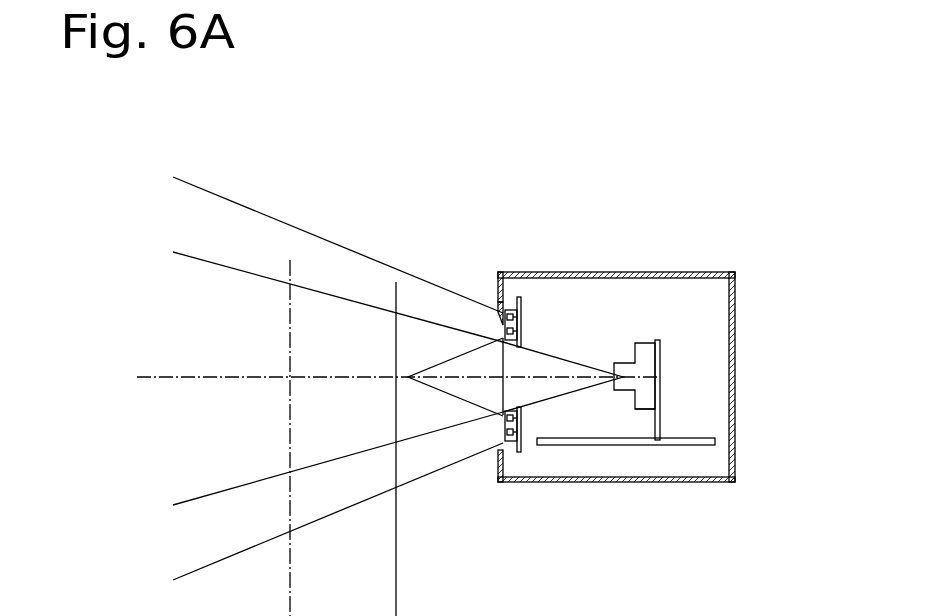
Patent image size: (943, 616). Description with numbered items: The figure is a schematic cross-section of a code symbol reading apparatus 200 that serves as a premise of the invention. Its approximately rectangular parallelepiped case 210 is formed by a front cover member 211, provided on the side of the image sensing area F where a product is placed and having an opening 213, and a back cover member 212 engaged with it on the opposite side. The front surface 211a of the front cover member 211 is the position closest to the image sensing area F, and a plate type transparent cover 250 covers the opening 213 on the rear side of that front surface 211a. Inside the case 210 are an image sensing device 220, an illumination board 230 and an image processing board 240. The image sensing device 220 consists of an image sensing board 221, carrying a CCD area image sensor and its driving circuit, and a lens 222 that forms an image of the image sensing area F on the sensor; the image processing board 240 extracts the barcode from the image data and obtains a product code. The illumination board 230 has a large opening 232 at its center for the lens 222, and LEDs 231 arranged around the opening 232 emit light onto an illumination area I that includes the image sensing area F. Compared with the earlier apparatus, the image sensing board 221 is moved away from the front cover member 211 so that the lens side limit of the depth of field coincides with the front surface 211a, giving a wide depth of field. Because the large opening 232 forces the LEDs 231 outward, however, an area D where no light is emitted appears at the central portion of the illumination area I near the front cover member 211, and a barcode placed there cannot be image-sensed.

The code symbol reading apparatus 200 is at (690, 258).
The case 210 is at (640, 365).
The front cover member 211 is at (500, 219).
The front surface 211a is at (494, 281).
The back cover member 212 is at (736, 297).
The image sensing opening 213 is at (500, 458).
The image sensing device 220 is at (702, 357).
The image sensing board 221 is at (660, 415).
The lens 222 is at (645, 409).
The illumination board 230 is at (523, 500).
The LEDs 231 is at (518, 452).
The opening 232 is at (502, 444).
The image processing board 240 is at (700, 447).
The transparent cover 250 is at (499, 440).
The illumination area I is at (245, 207).
The image sensing area F is at (313, 290).
The area where light is not emitted D is at (457, 357).